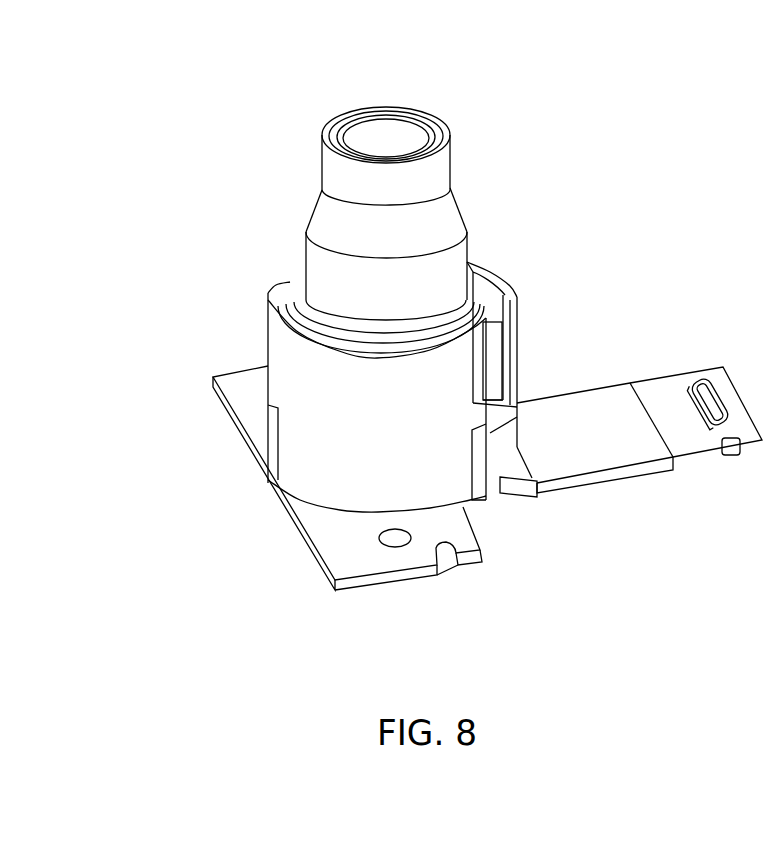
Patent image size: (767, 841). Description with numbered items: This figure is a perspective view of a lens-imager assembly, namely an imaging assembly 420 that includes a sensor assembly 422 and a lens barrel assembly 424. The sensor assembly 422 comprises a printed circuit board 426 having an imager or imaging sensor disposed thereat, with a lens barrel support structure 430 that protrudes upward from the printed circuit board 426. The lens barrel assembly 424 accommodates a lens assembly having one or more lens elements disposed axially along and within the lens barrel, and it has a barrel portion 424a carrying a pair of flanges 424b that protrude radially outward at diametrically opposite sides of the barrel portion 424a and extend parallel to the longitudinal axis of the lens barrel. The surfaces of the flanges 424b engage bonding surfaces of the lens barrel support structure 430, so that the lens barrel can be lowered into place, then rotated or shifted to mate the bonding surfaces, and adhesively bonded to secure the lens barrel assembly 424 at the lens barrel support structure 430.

The imaging assembly 420 is at (522, 122).
The lens barrel assembly 424 is at (296, 188).
The barrel portion 424a is at (460, 257).
The flanges 424b is at (500, 350).
The lens barrel support structure 430 is at (272, 362).
The printed circuit board 426 is at (322, 547).
The sensor assembly 422 is at (594, 365).